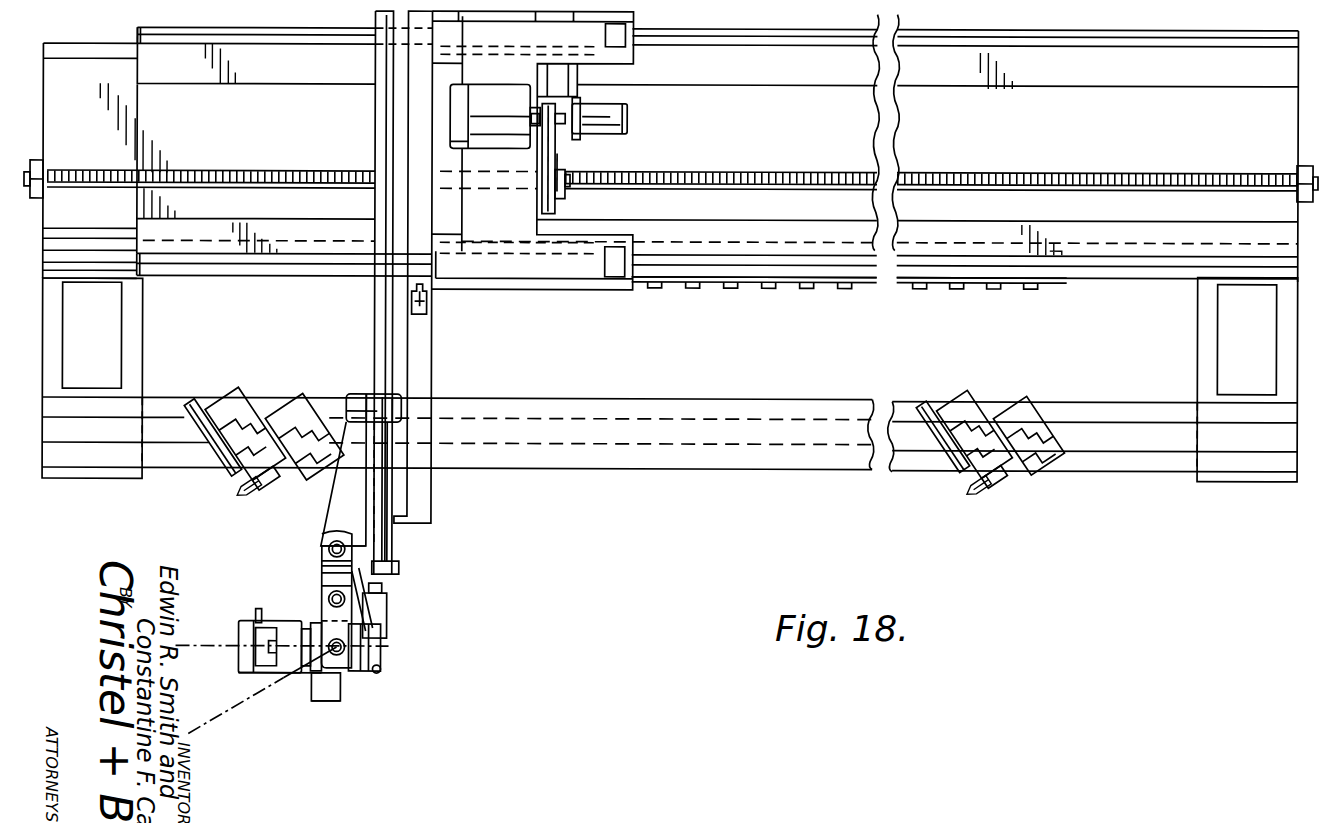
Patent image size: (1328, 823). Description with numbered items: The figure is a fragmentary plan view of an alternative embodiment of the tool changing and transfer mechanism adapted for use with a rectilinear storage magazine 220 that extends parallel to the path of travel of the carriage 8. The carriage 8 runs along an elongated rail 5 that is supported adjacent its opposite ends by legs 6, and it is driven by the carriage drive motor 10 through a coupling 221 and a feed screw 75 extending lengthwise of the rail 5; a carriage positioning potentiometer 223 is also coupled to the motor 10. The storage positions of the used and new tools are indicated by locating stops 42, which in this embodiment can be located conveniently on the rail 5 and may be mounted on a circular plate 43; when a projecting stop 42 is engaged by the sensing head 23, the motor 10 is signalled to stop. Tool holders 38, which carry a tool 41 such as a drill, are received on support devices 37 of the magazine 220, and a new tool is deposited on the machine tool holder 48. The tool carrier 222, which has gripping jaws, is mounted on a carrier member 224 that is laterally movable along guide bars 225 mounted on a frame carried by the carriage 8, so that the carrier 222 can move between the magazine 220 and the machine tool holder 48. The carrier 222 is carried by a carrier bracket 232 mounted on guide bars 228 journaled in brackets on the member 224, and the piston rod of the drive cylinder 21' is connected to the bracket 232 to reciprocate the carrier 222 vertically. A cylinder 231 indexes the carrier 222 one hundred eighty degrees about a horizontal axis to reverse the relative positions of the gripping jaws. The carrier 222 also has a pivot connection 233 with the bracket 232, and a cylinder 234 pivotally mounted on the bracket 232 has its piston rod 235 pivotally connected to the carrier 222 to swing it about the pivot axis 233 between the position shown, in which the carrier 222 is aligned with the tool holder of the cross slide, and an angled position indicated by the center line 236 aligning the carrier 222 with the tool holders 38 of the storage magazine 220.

The rail 5 is at (880, 28).
The legs 6 is at (143, 339).
The carriage 8 is at (548, 288).
The carriage drive motor 10 is at (500, 66).
The drive cylinder 21' is at (308, 559).
The sensing head 23 is at (428, 300).
The support device 37 is at (940, 404).
The tool holder 38 is at (262, 660).
The tool 41 is at (262, 490).
The locating stops 42 is at (686, 285).
The circular plate 43 is at (1053, 283).
The machine tool holder 48 is at (294, 680).
The feed screw 75 is at (878, 171).
The rectilinear storage magazine 220 is at (260, 394).
The coupling 221 is at (547, 140).
The tool carrier 222 is at (345, 705).
The carriage positioning potentiometer 223 is at (628, 114).
The carrier member 224 is at (348, 394).
The guide bars 225 is at (375, 306).
The guide bars 228 is at (334, 551).
The cylinder 231 is at (332, 701).
The carrier bracket 232 is at (330, 610).
The pivot connection 233 is at (345, 680).
The cylinder 234 is at (383, 607).
The piston rod 235 is at (387, 655).
The center line 236 is at (200, 732).